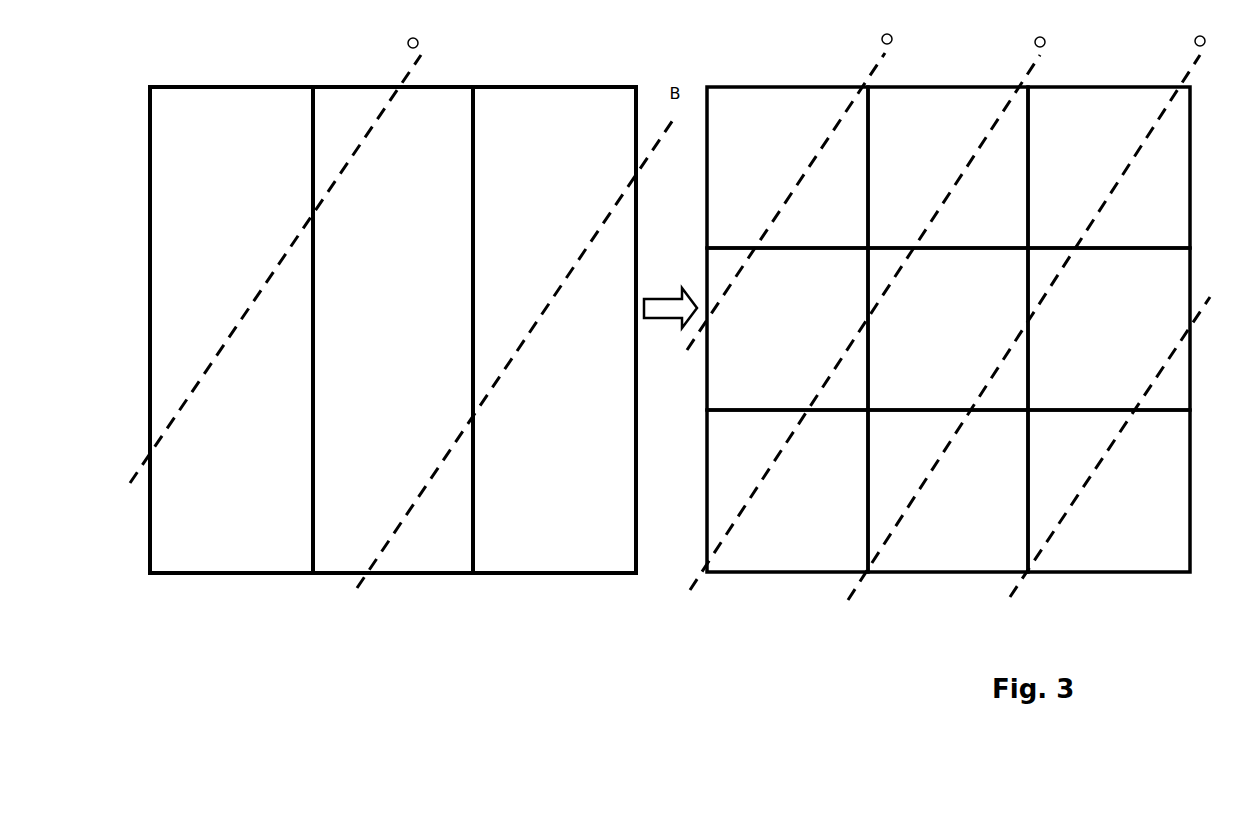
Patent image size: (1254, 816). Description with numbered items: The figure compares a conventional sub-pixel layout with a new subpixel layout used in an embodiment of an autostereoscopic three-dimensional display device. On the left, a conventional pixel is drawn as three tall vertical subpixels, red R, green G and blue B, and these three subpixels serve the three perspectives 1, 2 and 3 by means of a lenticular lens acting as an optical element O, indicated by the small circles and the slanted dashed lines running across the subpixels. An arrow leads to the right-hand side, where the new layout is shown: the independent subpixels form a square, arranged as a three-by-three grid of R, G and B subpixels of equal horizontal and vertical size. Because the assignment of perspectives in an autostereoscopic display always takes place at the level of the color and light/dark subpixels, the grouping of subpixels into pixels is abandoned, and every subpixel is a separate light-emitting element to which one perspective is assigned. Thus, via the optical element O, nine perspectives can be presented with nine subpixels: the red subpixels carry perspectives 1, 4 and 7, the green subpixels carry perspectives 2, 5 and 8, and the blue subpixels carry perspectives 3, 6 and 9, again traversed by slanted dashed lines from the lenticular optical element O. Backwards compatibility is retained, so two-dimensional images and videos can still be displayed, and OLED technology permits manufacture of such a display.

The perspective 1 is at (509, 330).
The perspective 2 is at (670, 330).
The perspective 3 is at (831, 330).
The perspective 4 is at (787, 329).
The perspective 5 is at (948, 329).
The perspective 6 is at (1109, 329).
The perspective 7 is at (787, 491).
The perspective 8 is at (948, 491).
The perspective 9 is at (1109, 491).